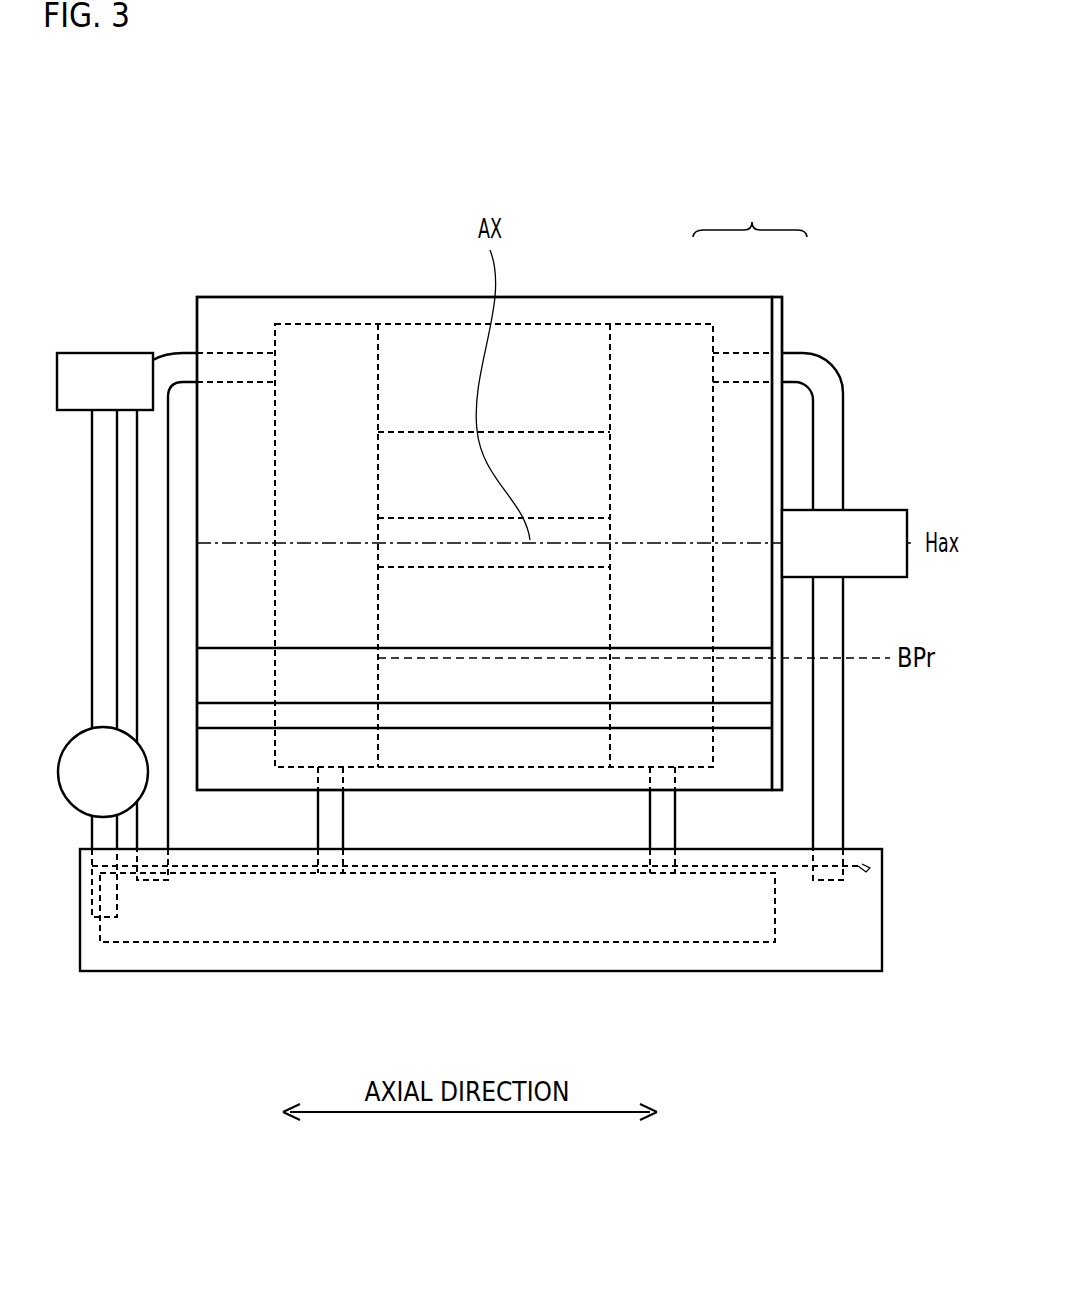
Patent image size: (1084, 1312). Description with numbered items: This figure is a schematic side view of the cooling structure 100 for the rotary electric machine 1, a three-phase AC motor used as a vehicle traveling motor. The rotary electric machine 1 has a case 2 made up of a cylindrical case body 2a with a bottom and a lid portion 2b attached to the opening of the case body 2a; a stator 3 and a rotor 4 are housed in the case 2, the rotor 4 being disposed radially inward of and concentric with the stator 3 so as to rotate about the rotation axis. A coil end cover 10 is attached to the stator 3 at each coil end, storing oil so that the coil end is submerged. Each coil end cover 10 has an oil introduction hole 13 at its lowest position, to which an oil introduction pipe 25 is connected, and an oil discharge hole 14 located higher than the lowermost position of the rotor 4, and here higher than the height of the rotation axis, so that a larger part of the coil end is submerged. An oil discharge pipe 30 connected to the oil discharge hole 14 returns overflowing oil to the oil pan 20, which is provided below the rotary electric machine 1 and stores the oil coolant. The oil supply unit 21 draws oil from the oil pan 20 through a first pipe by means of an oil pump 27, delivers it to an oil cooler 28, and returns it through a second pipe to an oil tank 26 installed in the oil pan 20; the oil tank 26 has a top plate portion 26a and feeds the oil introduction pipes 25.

The rotary electric machine 1 is at (460, 271).
The case 2 is at (750, 211).
The case body 2a is at (732, 297).
The lid portion 2b is at (773, 297).
The stator 3 is at (610, 683).
The rotor 4 is at (610, 607).
The coil end cover 10 is at (275, 427).
The oil introduction hole 13 is at (318, 767).
The oil discharge hole 14 is at (276, 345).
The oil pan 20 is at (872, 848).
The oil supply unit 21 is at (92, 303).
The oil introduction pipe 25 is at (343, 823).
The oil tank 26 is at (390, 943).
The top plate portion 26a is at (550, 862).
The oil pump 27 is at (71, 740).
The oil cooler 28 is at (132, 352).
The oil discharge pipe 30 is at (183, 350).
The cooling structure 100 is at (857, 1068).